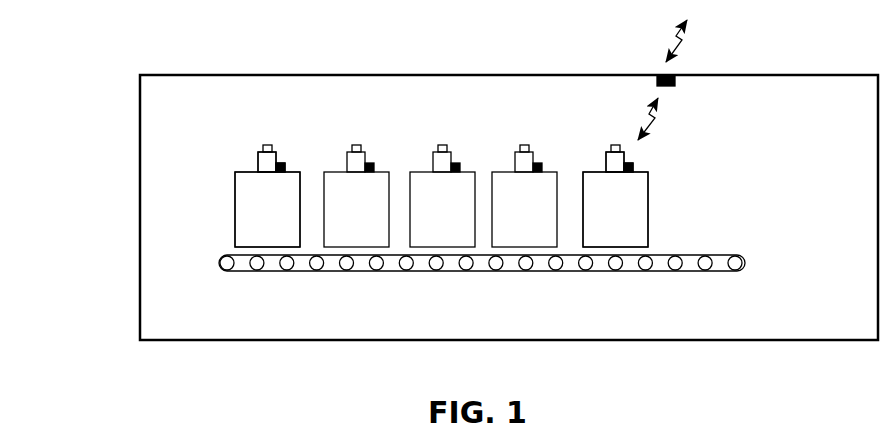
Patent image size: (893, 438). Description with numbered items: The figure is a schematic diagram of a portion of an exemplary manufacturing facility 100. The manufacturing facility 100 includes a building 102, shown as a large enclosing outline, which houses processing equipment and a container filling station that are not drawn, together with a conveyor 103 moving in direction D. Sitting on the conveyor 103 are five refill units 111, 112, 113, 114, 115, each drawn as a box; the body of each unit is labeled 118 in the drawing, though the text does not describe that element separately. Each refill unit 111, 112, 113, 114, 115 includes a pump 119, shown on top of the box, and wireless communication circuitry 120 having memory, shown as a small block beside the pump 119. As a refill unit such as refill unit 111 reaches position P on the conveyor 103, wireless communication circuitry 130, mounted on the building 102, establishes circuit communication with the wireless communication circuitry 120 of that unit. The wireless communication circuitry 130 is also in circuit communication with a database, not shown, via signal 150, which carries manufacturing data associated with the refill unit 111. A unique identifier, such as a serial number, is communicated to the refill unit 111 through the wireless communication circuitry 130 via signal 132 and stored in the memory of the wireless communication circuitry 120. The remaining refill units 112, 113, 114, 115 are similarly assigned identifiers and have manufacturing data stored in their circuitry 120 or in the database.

The manufacturing facility 100 is at (100, 136).
The building 102 is at (335, 75).
The conveyor 103 is at (727, 272).
The refill unit 111 is at (572, 242).
The refill unit 112 is at (483, 242).
The refill unit 113 is at (398, 241).
The refill unit 114 is at (312, 241).
The refill unit 115 is at (222, 241).
The printing unit body 118 is at (235, 187).
The pump 119 is at (258, 155).
The wireless communication circuitry 120 is at (285, 163).
The wireless communication circuitry 130 is at (676, 76).
The signal 132 is at (645, 122).
The signal 150 is at (672, 40).
The direction D is at (735, 243).
The position P is at (633, 276).